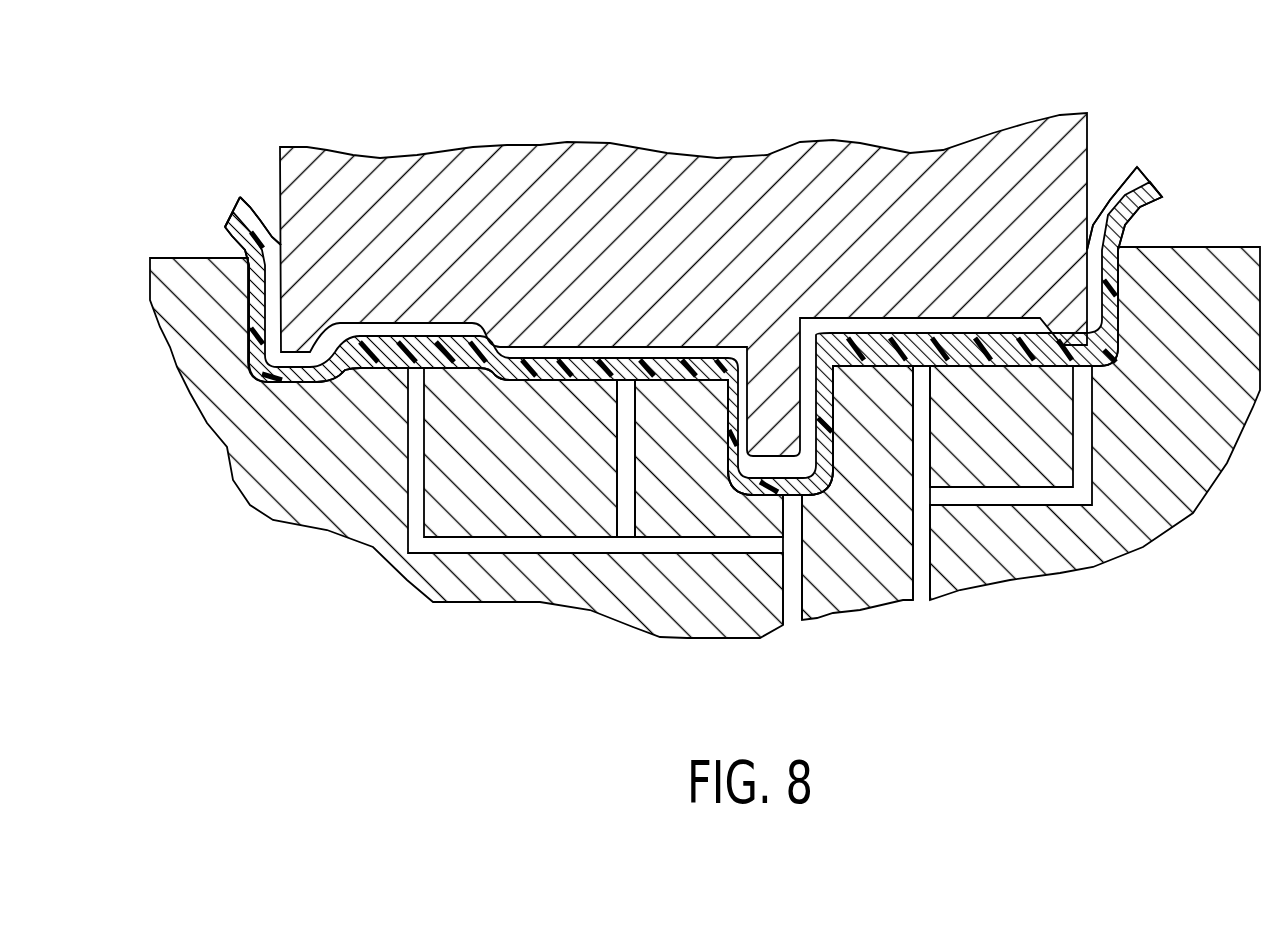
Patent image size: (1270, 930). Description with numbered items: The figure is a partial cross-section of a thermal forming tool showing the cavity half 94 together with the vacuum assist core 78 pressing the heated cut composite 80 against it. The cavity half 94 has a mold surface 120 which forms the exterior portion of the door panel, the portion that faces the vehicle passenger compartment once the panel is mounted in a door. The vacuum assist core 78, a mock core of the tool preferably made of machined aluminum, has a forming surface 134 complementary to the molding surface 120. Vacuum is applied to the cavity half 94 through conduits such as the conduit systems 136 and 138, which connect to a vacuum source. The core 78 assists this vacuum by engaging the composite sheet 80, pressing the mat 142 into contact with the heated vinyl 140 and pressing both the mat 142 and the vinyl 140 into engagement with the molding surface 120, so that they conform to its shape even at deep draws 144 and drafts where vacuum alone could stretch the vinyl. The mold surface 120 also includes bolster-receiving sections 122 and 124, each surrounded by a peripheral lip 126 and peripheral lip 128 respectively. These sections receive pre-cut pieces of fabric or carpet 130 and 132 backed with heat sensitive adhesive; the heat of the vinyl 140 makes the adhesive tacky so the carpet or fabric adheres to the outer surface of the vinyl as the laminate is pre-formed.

The vacuum assist core 78 is at (1068, 108).
The heated cut composite 80 is at (1155, 170).
The cavity half 94 is at (1192, 516).
The mold surface 120 is at (683, 345).
The bolster-receiving section 122 is at (946, 333).
The bolster-receiving section 124 is at (378, 333).
The peripheral lip 126 is at (833, 363).
The peripheral lip 128 is at (353, 337).
The pre-cut fabric or carpet 130 is at (882, 363).
The pre-cut fabric or carpet 132 is at (423, 360).
The forming surface 134 is at (607, 380).
The conduit system 136 is at (700, 553).
The conduit system 138 is at (937, 560).
The heated vinyl 140 is at (713, 363).
The mat material 142 is at (597, 345).
The deep draws 144 is at (818, 478).